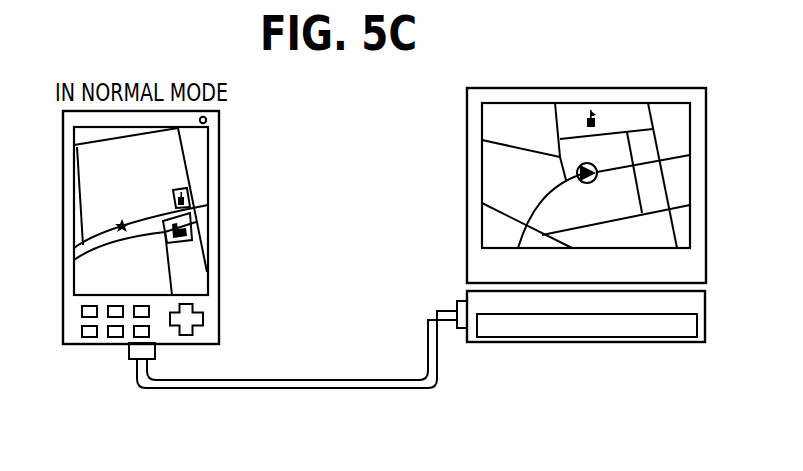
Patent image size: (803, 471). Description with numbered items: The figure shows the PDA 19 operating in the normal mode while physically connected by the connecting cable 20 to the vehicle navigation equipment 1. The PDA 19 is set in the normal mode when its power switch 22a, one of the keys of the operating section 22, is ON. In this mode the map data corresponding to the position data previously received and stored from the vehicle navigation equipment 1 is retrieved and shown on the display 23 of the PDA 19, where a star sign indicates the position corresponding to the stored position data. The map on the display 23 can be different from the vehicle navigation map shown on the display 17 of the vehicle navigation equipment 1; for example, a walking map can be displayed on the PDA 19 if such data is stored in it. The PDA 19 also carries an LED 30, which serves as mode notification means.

The vehicle navigation equipment 1 is at (455, 180).
The display 17 is at (466, 272).
The PDA 19 is at (234, 194).
The connecting cable 20 is at (333, 380).
The operating section 22 is at (165, 351).
The power switch 22a is at (87, 338).
The display 23 is at (208, 262).
The LED 30 is at (207, 121).